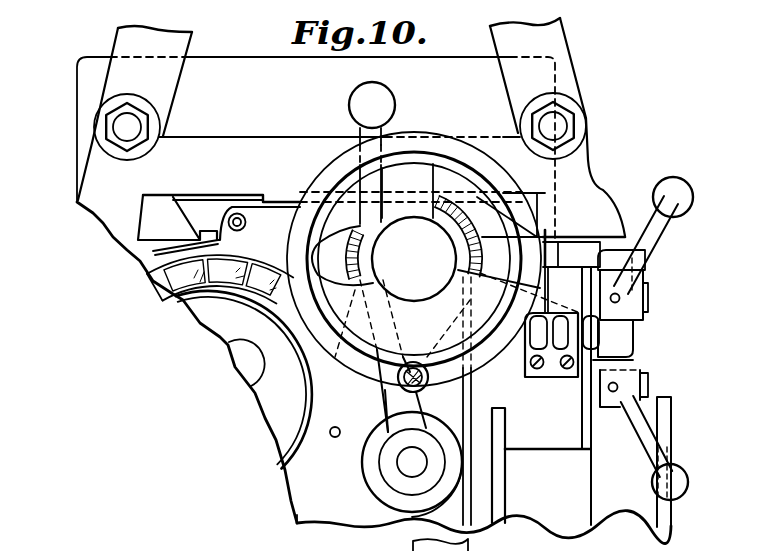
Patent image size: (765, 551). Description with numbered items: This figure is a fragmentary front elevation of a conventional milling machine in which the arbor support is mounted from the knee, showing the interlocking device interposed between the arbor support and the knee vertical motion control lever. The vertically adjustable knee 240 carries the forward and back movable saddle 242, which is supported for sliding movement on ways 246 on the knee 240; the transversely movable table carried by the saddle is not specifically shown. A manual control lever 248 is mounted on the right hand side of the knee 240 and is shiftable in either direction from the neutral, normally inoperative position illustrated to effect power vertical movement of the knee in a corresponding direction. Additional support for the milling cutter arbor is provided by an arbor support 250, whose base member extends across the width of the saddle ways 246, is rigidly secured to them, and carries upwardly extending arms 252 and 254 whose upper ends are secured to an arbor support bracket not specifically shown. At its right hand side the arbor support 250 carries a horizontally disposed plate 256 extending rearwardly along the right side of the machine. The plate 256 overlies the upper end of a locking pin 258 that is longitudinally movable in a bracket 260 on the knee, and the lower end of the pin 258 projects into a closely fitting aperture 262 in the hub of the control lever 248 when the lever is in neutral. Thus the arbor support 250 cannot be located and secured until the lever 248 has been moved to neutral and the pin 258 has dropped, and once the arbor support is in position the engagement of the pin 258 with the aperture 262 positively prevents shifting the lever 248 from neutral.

The knee 240 is at (307, 483).
The saddle 242 is at (85, 98).
The ways 246 is at (207, 210).
The manual control lever 248 is at (647, 435).
The arbor support 250 is at (575, 168).
The upwardly extending arm 252 is at (178, 46).
The upwardly extending arm 254 is at (550, 40).
The plate 256 is at (622, 232).
The locking pin 258 is at (620, 247).
The bracket 260 is at (623, 338).
The aperture 262 is at (643, 367).